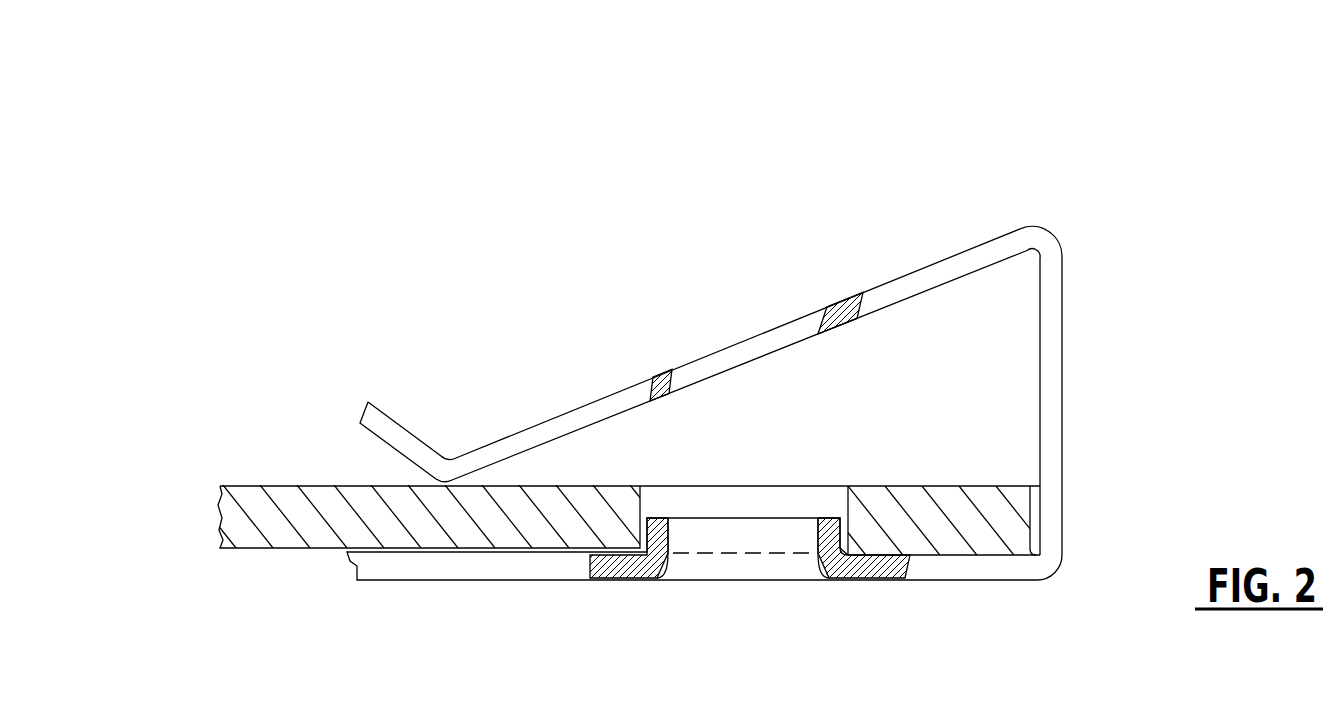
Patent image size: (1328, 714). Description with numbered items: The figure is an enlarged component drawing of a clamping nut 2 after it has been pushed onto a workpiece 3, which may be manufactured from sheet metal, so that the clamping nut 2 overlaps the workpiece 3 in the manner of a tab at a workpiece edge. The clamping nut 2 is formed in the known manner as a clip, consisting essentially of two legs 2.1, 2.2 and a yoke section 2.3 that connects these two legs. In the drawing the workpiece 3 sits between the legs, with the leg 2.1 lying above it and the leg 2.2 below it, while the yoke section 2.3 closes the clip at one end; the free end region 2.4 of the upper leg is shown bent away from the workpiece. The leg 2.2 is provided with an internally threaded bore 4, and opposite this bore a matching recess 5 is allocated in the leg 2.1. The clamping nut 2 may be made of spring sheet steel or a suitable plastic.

The clamping nut 2 is at (688, 355).
The leg 2.1 is at (583, 418).
The leg 2.2 is at (540, 563).
The yoke section 2.3 is at (1053, 410).
The bent end tip of spring arm 2.4 is at (352, 455).
The workpiece 3 is at (305, 532).
The internally threaded bore 4 is at (773, 566).
The recess 5 is at (737, 352).